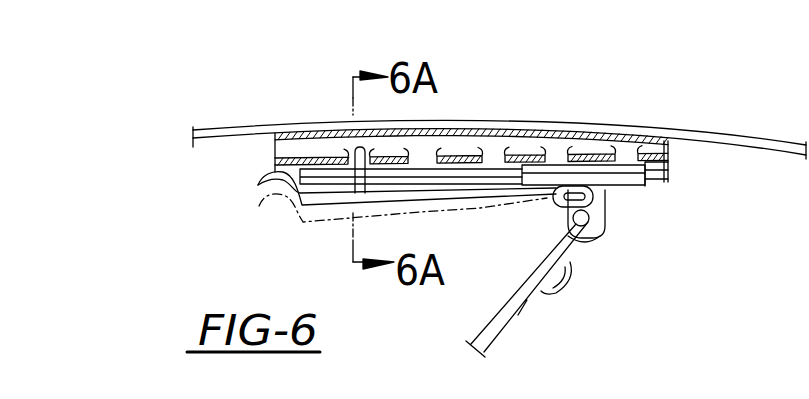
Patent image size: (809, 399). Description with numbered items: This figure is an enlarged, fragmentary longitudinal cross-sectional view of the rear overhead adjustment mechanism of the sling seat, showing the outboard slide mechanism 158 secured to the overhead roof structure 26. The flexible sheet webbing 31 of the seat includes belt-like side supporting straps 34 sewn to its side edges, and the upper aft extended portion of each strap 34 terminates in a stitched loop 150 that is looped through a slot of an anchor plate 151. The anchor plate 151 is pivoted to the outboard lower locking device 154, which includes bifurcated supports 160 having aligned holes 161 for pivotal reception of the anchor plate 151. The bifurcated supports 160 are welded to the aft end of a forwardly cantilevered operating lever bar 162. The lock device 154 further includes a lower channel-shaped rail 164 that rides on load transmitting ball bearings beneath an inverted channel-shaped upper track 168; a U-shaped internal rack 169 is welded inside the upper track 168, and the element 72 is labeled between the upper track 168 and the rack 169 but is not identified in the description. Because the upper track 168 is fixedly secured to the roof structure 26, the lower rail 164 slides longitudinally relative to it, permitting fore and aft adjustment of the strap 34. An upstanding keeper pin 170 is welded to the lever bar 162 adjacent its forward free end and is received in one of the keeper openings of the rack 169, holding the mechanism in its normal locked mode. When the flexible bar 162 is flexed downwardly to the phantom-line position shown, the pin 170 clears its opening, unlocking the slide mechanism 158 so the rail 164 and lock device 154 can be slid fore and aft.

The overhead roof structure 26 is at (673, 131).
The U-shaped internal rack 169 is at (300, 157).
The inverted channel-shaped upper track 168 is at (275, 160).
The spring clips 72 is at (497, 155).
The upstanding keeper pin 170 is at (360, 147).
The lower channel-shaped rail 164 is at (643, 187).
The outboard slide mechanism 158 is at (240, 184).
The operating lever bar 162 is at (264, 213).
The aligned holes 161 is at (568, 208).
The outboard lower locking device 154 is at (632, 208).
The bifurcated supports 160 is at (600, 231).
The anchor plate 151 is at (567, 247).
The stitched loop 150 is at (560, 293).
The side supporting straps 34 is at (520, 305).
The webbing 31 is at (520, 338).